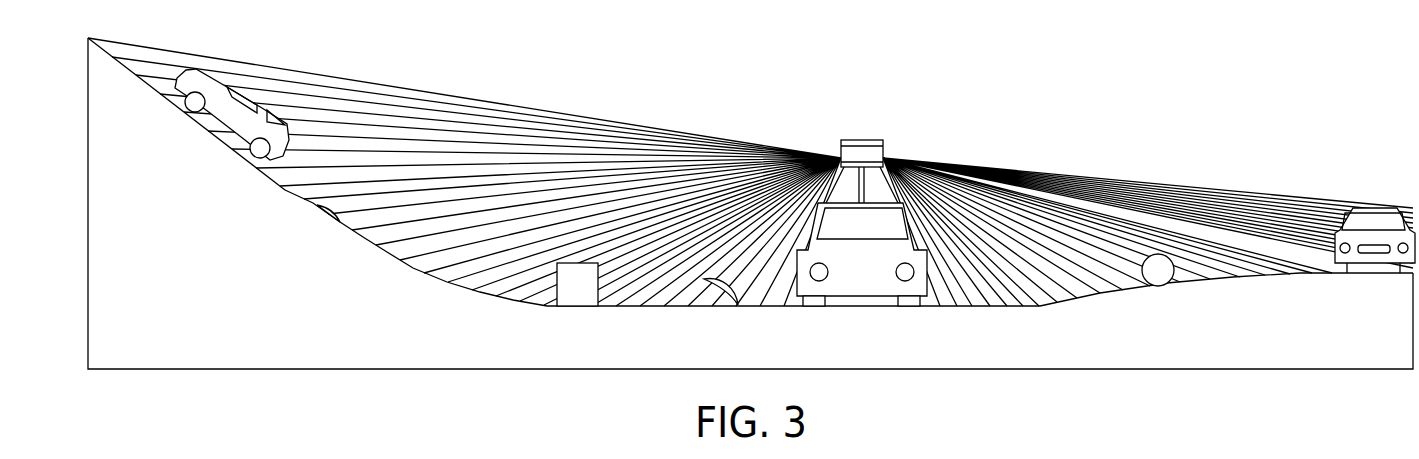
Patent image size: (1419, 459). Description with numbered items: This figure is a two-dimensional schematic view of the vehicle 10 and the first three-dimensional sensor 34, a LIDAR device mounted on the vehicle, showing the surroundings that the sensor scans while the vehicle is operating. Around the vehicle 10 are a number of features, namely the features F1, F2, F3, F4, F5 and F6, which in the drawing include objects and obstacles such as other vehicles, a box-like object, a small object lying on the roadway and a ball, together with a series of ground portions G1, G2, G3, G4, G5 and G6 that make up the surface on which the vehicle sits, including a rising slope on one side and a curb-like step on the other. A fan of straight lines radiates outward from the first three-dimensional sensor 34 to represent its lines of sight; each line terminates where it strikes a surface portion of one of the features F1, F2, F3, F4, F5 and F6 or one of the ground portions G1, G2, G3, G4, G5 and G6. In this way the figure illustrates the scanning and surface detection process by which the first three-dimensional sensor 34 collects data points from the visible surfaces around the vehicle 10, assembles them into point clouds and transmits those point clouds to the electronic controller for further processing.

The vehicle 10 is at (861, 276).
The first 3D sensor 34 is at (858, 152).
The feature F1 is at (238, 118).
The feature F2 is at (318, 212).
The feature F3 is at (577, 287).
The feature F4 is at (722, 287).
The feature F5 is at (1158, 274).
The feature F6 is at (1372, 260).
The ground portion G1 is at (105, 57).
The ground portion G2 is at (287, 190).
The ground portion G3 is at (410, 267).
The ground portion G4 is at (640, 307).
The ground portion G5 is at (1072, 303).
The ground portion G6 is at (1257, 279).